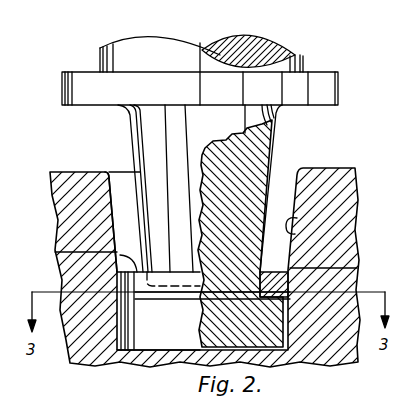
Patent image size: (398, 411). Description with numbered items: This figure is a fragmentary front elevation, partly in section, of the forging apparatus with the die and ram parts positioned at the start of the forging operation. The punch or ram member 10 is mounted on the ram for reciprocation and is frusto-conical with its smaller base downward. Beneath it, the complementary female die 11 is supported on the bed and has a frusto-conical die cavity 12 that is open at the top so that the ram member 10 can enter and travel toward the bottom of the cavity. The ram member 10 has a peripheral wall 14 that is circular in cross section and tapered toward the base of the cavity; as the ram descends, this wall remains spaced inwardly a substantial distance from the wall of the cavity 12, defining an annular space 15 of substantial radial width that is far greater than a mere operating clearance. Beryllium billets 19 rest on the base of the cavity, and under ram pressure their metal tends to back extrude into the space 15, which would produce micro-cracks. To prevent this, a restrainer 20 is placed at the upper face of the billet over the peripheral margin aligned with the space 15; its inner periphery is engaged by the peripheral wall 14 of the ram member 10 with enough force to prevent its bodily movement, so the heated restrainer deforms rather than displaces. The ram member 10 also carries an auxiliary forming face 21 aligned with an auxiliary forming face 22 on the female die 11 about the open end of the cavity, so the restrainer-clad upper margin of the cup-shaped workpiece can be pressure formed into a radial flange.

The ram member 10 is at (257, 155).
The female die 11 is at (330, 192).
The die cavity 12 is at (300, 221).
The peripheral wall 14 is at (130, 140).
The annular space 15 is at (125, 205).
The beryllium billet 19 is at (150, 343).
The restrainer 20 is at (60, 263).
The auxiliary forming face 21 is at (299, 81).
The auxiliary forming face 22 is at (343, 101).